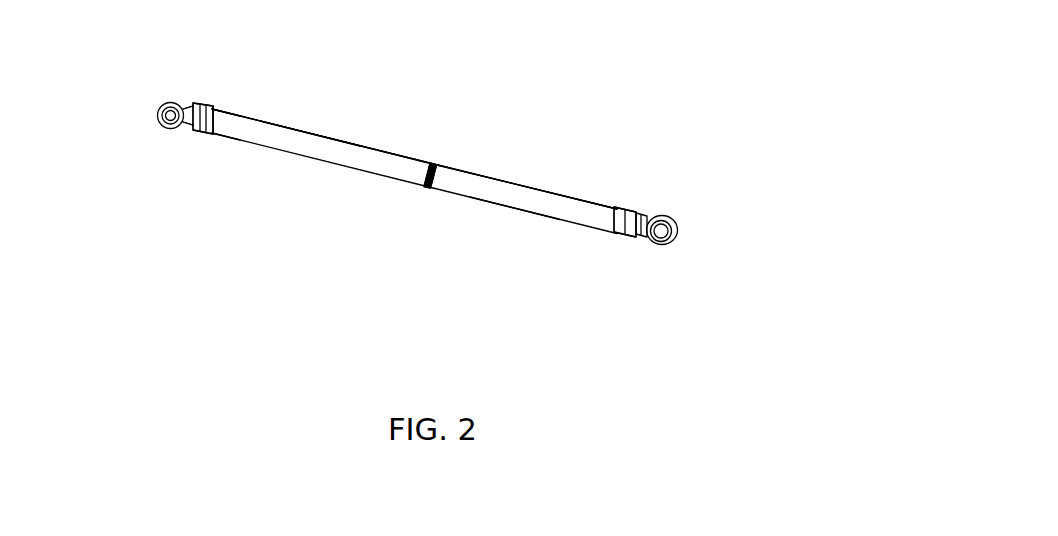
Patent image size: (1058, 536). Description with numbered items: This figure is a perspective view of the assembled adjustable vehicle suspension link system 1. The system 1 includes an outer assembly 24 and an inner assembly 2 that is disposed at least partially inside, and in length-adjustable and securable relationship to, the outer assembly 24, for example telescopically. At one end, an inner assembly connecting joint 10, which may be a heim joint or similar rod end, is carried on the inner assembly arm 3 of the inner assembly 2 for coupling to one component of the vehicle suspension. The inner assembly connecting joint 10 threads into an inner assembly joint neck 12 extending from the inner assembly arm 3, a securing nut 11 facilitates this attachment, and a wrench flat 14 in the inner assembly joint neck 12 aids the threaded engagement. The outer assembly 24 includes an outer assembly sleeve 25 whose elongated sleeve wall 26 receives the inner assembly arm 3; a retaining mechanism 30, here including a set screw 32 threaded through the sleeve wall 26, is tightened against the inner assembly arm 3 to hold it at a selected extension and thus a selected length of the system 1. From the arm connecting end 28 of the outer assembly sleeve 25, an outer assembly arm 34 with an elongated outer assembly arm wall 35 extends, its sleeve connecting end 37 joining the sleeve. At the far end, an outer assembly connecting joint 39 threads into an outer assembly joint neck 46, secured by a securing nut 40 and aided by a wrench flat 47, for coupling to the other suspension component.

The system 1 is at (458, 102).
The inner assembly 2 is at (175, 137).
The inner assembly arm 3 is at (210, 143).
The inner assembly connecting joint 10 is at (156, 117).
The securing nut 11 is at (206, 108).
The inner assembly joint neck 12 is at (196, 132).
The wrench flat 14 is at (200, 134).
The outer assembly 24 is at (505, 148).
The outer assembly sleeve 25 is at (366, 173).
The sleeve wall 26 is at (316, 143).
The arm connecting end 28 is at (435, 182).
The retaining mechanism 30 is at (251, 109).
The set screw 32 is at (223, 115).
The outer assembly arm 34 is at (568, 222).
The outer assembly arm wall 35 is at (512, 193).
The sleeve connecting end 37 is at (425, 185).
The outer assembly connecting joint 39 is at (680, 226).
The securing nut 40 is at (630, 238).
The outer assembly joint neck 46 is at (611, 226).
The wrench flat 47 is at (630, 209).